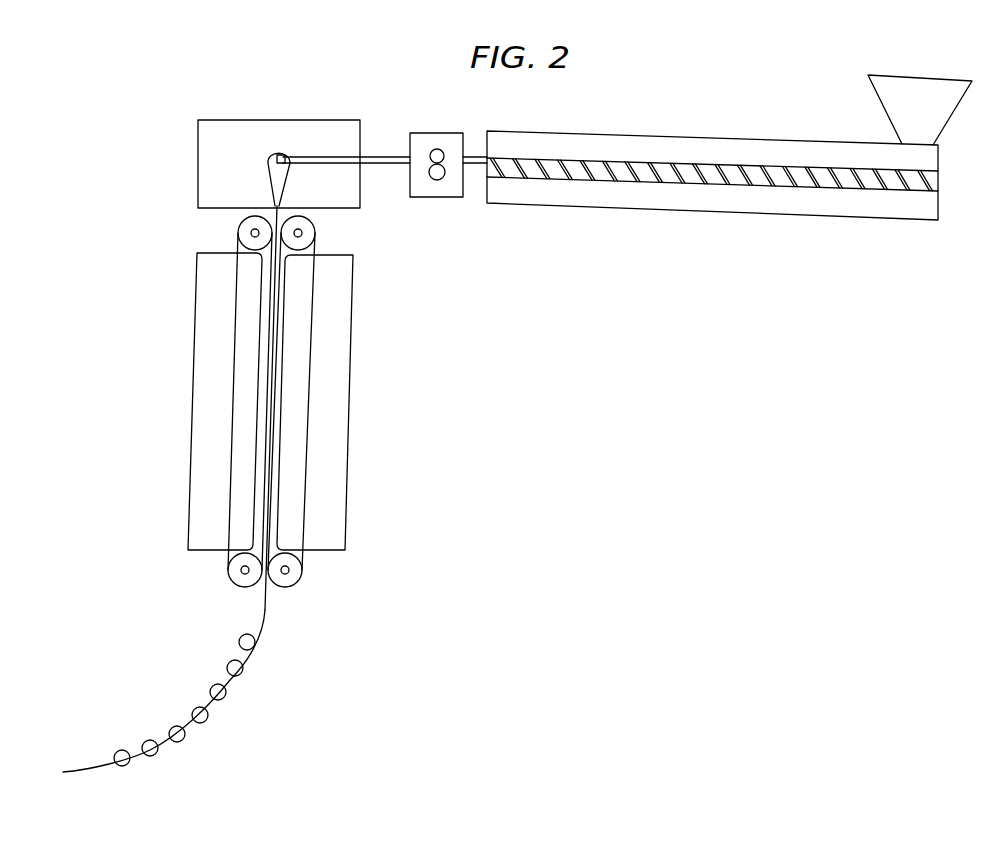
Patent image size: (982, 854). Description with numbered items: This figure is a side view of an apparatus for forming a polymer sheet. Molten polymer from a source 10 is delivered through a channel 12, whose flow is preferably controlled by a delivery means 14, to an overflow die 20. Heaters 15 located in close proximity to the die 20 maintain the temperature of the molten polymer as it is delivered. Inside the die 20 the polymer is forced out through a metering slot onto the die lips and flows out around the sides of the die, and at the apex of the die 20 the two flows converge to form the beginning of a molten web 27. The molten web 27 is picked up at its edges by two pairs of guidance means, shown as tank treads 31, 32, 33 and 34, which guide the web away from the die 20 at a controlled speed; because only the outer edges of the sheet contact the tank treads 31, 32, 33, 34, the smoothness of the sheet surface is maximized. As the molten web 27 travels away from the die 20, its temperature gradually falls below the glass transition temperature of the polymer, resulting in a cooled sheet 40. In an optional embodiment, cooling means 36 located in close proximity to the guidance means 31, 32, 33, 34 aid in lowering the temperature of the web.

The source 10 is at (585, 207).
The channel 12 is at (383, 165).
The delivery means 14 is at (430, 198).
The heaters 15 is at (277, 119).
The overflow die 20 is at (266, 165).
The molten web 27 is at (287, 210).
The tank tread 31 is at (192, 401).
The tank tread 32 is at (233, 373).
The tank tread 33 is at (353, 401).
The tank tread 34 is at (312, 357).
The cooling means 36 is at (190, 482).
The cooled sheet 40 is at (266, 610).